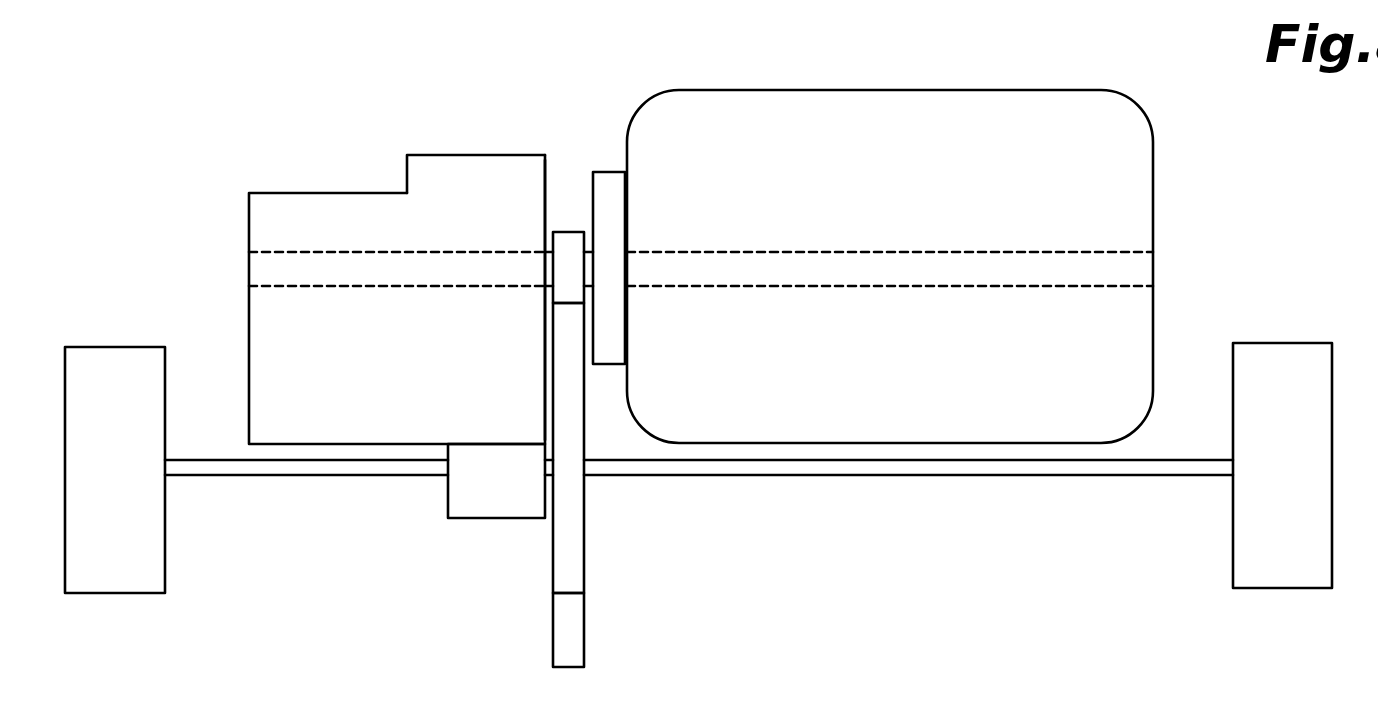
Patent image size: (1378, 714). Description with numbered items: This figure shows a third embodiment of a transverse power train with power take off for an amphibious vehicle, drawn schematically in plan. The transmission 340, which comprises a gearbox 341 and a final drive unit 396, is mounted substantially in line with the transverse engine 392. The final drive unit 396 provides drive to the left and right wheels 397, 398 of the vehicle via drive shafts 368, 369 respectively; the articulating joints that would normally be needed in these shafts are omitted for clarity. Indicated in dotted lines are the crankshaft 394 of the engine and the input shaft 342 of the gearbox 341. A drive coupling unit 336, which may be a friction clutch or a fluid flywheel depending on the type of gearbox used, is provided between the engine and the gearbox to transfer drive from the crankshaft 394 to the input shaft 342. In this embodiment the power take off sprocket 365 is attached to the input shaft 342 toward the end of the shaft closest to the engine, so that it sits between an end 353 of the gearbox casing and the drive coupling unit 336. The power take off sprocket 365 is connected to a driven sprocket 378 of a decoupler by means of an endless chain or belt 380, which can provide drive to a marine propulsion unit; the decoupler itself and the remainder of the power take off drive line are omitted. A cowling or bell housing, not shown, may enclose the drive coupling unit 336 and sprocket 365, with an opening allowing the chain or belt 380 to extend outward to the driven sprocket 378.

The drive coupling unit 336 is at (610, 185).
The transmission 340 is at (463, 153).
The gearbox 341 is at (336, 366).
The input shaft 342 is at (443, 273).
The end of the gearbox casing 353 is at (545, 178).
The power take off sprocket 365 is at (570, 242).
The drive shaft 368 is at (230, 470).
The drive shaft 369 is at (927, 468).
The driven sprocket 378 is at (570, 633).
The endless chain or belt 380 is at (570, 567).
The transverse engine 392 is at (1063, 122).
The crankshaft 394 is at (993, 282).
The final drive unit 396 is at (478, 495).
The left wheel 397 is at (110, 370).
The right wheel 398 is at (1283, 365).